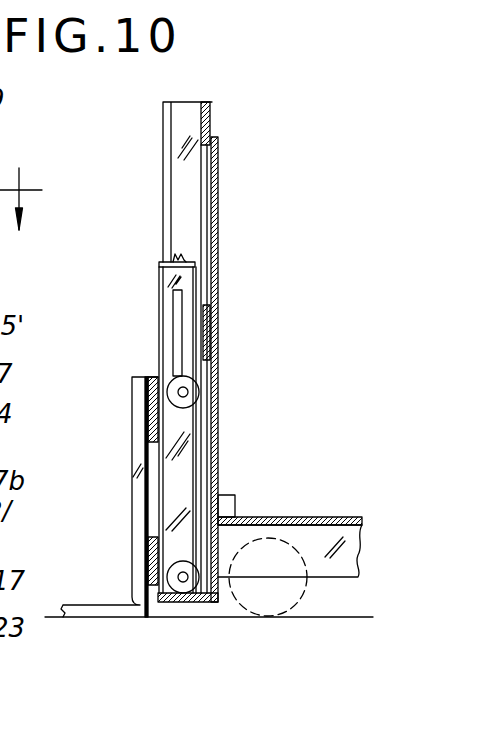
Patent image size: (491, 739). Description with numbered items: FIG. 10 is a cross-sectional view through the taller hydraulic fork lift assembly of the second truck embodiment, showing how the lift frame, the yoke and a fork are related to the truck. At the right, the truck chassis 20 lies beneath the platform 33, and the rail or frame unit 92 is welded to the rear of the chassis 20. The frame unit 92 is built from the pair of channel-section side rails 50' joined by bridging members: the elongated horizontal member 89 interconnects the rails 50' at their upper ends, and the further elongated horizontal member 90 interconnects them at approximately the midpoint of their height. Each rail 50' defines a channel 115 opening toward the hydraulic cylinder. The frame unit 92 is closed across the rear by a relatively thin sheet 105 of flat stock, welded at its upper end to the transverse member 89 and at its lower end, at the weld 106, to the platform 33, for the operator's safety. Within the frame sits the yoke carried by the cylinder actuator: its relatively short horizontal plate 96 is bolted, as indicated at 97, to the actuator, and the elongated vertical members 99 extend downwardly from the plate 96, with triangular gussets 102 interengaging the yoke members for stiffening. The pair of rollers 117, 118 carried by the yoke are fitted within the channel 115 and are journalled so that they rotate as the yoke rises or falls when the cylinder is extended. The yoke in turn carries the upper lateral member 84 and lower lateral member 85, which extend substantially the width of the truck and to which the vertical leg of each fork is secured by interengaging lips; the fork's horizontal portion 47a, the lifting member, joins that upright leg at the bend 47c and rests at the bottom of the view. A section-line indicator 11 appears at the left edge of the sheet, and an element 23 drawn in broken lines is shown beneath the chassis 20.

The section line indicator 11 is at (29, 196).
The side rails 50' is at (159, 182).
The elongated horizontal member 89 is at (210, 122).
The further elongated horizontal member 90 is at (215, 303).
The thin sheet 105 is at (217, 397).
The rail or frame unit 92 is at (160, 200).
The channel 115 is at (195, 197).
The bolt 97 is at (178, 258).
The horizontal plate 96 is at (158, 258).
The elongated vertical members 99 is at (160, 300).
The gussets 102 is at (172, 328).
The roller 117 is at (183, 377).
The roller 118 is at (183, 560).
The horizontal portion 47a is at (103, 607).
The bend 47c is at (147, 618).
The upper lateral member 84 is at (155, 445).
The lower lateral member 85 is at (153, 537).
The weld 106 is at (217, 513).
The platform 33 is at (327, 483).
The truck chassis 20 is at (328, 575).
The pipe 23 is at (250, 622).